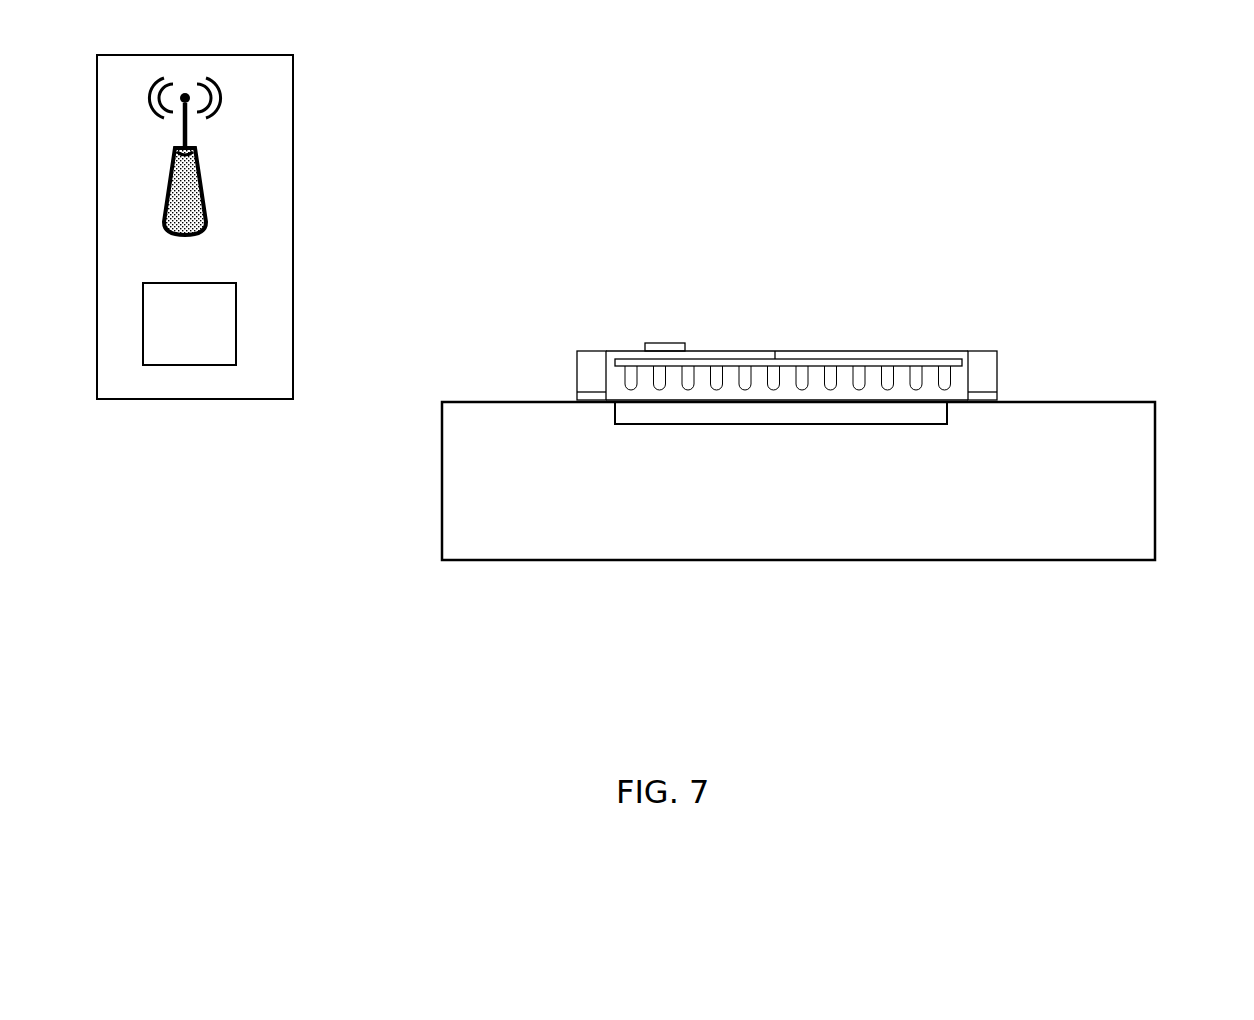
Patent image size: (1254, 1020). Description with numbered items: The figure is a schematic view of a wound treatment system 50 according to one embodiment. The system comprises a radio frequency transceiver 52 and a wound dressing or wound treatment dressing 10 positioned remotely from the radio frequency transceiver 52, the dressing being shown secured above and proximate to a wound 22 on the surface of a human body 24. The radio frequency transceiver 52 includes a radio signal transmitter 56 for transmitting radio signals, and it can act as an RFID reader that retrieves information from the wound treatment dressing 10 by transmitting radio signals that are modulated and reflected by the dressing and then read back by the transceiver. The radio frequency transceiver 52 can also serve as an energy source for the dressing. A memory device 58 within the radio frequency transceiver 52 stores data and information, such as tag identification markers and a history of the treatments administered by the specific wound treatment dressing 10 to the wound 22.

The wound dressing 10 is at (905, 322).
The wound 22 is at (822, 411).
The human body 24 is at (1061, 525).
The wound treatment system 50 is at (208, 683).
The radio frequency transceiver 52 is at (336, 152).
The radio signal transmitter 56 is at (190, 193).
The memory device 58 is at (189, 329).